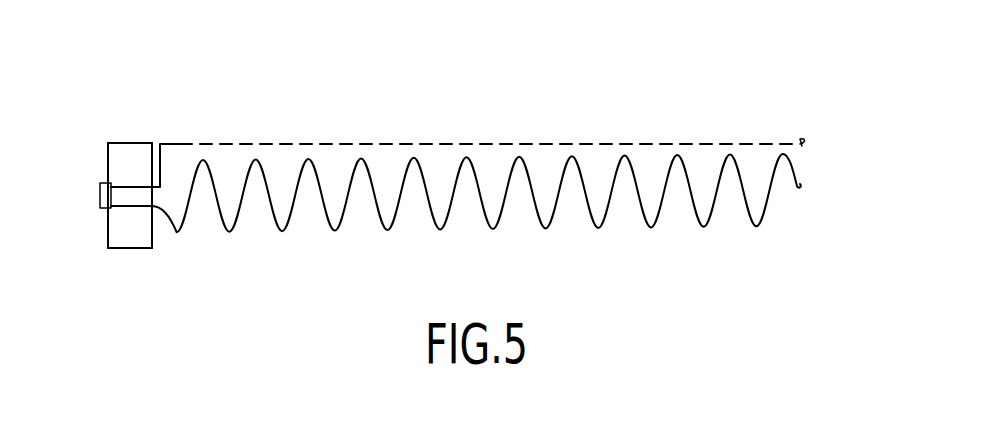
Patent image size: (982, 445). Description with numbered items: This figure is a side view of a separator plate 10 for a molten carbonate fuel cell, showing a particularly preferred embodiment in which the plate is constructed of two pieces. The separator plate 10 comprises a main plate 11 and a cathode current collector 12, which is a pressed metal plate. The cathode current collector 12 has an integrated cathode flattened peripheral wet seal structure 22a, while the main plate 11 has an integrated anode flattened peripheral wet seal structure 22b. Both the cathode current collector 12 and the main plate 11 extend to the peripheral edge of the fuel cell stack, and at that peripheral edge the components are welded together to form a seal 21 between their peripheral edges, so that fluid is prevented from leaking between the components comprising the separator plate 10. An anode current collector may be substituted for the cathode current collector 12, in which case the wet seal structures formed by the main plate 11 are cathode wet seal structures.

The separator plate 10 is at (500, 123).
The main plate 11 is at (504, 220).
The cathode current collector 12 is at (378, 143).
The seal 21 is at (100, 192).
The cathode flattened peripheral wet seal structure 22a is at (130, 143).
The anode flattened peripheral wet seal structure 22b is at (130, 248).